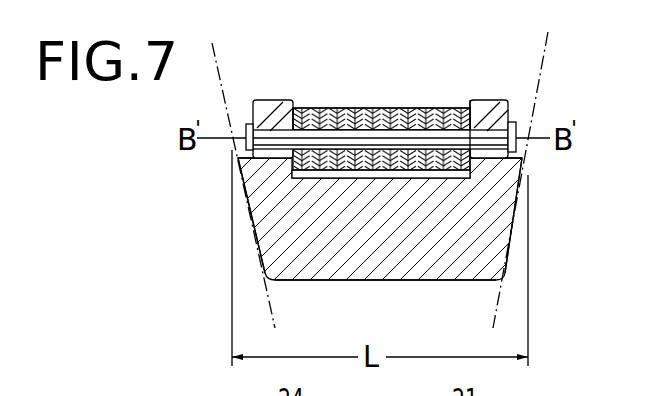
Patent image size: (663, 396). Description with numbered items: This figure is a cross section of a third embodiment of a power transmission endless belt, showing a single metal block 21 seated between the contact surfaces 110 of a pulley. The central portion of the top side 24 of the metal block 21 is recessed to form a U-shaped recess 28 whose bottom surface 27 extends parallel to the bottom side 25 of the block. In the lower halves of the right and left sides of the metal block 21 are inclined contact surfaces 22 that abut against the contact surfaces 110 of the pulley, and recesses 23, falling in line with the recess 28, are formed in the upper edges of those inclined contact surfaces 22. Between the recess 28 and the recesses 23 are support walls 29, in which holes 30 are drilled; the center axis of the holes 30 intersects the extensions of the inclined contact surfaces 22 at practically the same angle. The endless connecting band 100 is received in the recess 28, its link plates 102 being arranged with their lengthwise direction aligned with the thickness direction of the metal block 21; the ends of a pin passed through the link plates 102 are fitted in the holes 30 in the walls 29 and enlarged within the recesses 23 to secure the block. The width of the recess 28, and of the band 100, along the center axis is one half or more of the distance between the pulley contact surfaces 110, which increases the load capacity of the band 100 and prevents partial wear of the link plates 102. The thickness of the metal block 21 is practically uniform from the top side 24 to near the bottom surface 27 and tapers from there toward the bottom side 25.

The contact surfaces of a pulley 110 is at (224, 63).
The top side 24 is at (264, 100).
The holes 30 is at (278, 130).
The endless connecting band 100 is at (379, 105).
The link plates 102 is at (394, 107).
The U-shaped recess 28 is at (461, 97).
The recesses 23 is at (253, 106).
The support walls 29 is at (262, 161).
The inclined contact surfaces 22 is at (252, 227).
The metal block 21 is at (514, 244).
The bottom surface 27 is at (396, 179).
The bottom side 25 is at (317, 282).